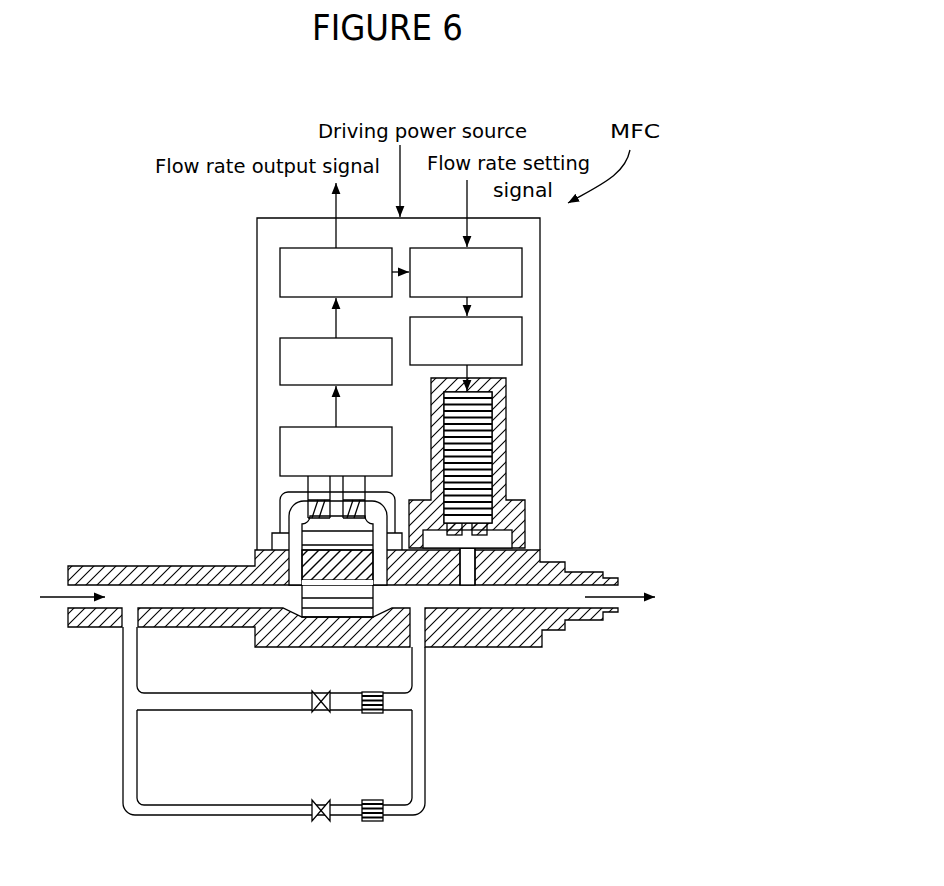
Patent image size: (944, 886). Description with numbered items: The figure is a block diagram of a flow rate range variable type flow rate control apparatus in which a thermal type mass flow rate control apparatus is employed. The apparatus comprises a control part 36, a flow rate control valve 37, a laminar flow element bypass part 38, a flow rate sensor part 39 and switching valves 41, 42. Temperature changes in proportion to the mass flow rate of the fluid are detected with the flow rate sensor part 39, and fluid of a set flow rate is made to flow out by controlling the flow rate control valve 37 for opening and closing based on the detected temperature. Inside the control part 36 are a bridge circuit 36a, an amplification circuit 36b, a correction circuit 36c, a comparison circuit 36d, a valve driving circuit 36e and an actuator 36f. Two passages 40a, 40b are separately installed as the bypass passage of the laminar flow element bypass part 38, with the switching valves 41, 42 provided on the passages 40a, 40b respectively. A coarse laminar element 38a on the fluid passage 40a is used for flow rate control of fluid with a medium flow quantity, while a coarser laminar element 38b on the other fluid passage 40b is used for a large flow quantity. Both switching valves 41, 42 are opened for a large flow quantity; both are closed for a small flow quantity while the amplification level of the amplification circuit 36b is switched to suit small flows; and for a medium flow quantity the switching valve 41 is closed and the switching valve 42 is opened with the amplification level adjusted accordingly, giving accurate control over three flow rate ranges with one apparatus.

The control part 36 is at (540, 382).
The bridge circuit 36a is at (280, 450).
The amplification circuit 36b is at (280, 352).
The correction circuit 36c is at (280, 256).
The comparison circuit 36d is at (522, 268).
The valve driving circuit 36e is at (522, 335).
The actuator 36f is at (470, 460).
The flow rate control valve 37 is at (508, 434).
The laminar flow element bypass part 38 is at (349, 621).
The coarse laminar element 38a is at (380, 693).
The coarser laminar element 38b is at (380, 802).
The flow rate sensor part 39 is at (289, 499).
The fluid passage 40a is at (262, 704).
The fluid passage 40b is at (262, 815).
The switching valve 41 is at (326, 803).
The switching valve 42 is at (326, 693).